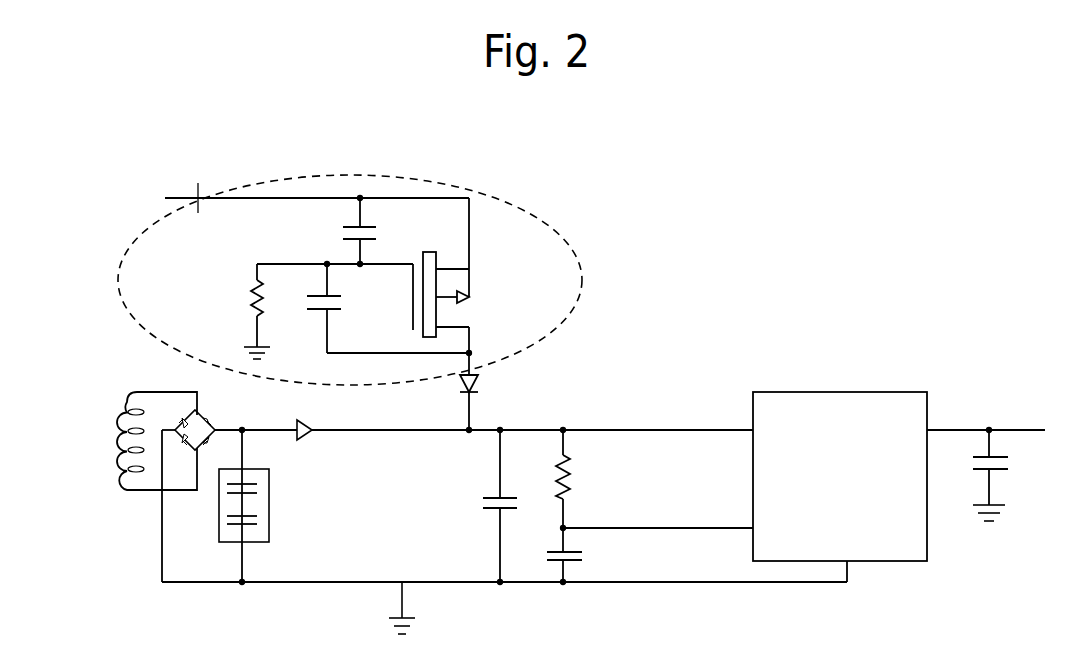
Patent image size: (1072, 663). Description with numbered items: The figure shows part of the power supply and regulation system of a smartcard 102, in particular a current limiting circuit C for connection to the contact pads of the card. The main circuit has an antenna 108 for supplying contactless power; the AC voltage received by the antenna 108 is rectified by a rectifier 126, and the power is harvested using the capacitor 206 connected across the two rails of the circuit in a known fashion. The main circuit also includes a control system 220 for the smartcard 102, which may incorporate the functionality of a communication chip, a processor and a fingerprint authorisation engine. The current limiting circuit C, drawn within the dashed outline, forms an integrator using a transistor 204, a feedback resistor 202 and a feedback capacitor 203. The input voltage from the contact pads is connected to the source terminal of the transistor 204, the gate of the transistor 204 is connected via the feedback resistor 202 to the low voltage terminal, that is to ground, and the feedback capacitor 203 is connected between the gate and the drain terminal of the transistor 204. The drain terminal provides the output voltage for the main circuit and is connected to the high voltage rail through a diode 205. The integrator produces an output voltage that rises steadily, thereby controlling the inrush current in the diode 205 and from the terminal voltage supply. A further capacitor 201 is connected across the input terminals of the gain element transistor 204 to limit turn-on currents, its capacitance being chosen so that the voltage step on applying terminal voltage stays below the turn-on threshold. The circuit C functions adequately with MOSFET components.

The smartcard 102 is at (772, 243).
The antenna 108 is at (122, 439).
The rectifier 126 is at (204, 420).
The capacitor 201 is at (338, 225).
The feedback resistor 202 is at (242, 292).
The feedback capacitor 203 is at (305, 290).
The transistor 204 is at (478, 283).
The diode 205 is at (485, 380).
The capacitor 206 is at (478, 486).
The control system 220 is at (822, 489).
The current limiting circuit C is at (508, 203).